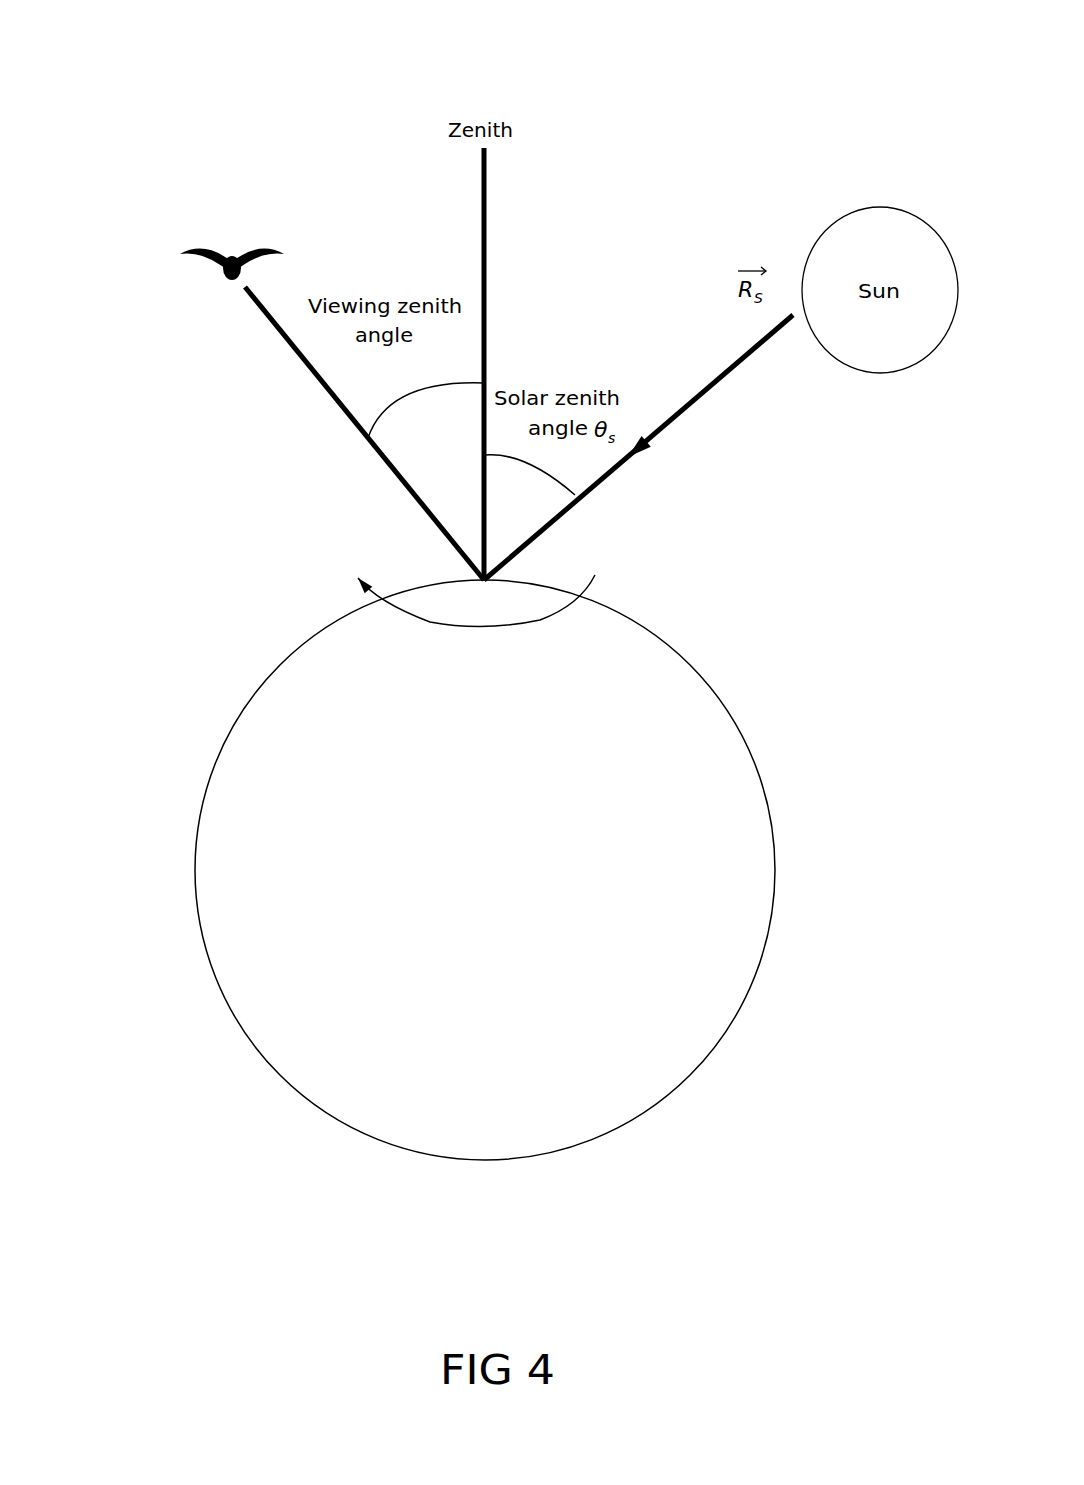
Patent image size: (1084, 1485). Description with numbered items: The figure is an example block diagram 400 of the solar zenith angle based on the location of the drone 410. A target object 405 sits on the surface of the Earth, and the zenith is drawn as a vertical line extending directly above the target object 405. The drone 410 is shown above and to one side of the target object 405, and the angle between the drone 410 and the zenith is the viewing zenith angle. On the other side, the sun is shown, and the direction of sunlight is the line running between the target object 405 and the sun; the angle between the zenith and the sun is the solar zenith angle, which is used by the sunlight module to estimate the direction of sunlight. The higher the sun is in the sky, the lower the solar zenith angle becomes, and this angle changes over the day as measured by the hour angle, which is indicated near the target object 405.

The block diagram 400 is at (92, 64).
The target object 405 is at (484, 582).
The drone 410 is at (217, 292).